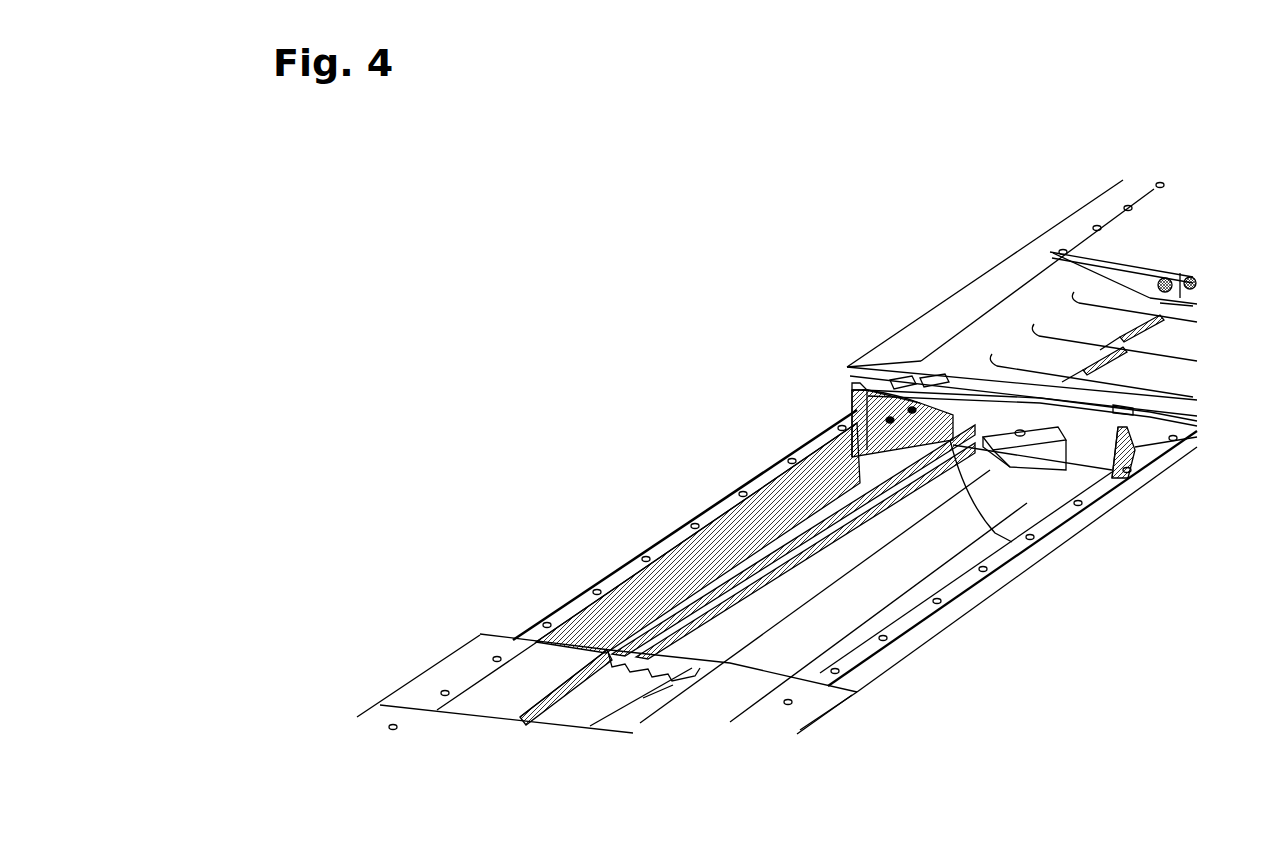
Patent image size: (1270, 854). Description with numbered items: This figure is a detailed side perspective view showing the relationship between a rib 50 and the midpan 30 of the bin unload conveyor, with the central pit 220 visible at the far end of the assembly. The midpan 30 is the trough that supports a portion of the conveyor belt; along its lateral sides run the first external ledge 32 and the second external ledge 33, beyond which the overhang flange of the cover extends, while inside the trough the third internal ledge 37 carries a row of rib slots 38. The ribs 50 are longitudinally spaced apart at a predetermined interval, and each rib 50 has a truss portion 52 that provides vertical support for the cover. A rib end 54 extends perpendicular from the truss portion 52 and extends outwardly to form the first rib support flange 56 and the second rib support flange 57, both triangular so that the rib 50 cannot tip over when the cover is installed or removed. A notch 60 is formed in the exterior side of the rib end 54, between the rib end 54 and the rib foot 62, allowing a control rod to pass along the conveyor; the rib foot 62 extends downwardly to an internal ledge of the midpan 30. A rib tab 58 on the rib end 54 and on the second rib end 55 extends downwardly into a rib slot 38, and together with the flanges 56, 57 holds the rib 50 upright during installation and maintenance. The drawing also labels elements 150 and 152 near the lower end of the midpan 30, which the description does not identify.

The central pit 220 is at (903, 275).
The midpan 30 is at (710, 483).
The second external ledge 33 is at (669, 537).
The third internal ledge 37 is at (749, 559).
The rib slots 38 is at (863, 484).
The first external ledge 32 is at (918, 618).
The plate 152 is at (484, 615).
The bracket 150 is at (627, 719).
The rib 50 is at (852, 383).
The first rib support flange 56 is at (855, 415).
The second rib end 55 is at (856, 437).
The second rib support flange 57 is at (880, 426).
The rib tab 58 is at (890, 437).
The truss portion 52 is at (1096, 446).
The rib foot 62 is at (1070, 466).
The rib end 54 is at (1133, 450).
The notch 60 is at (1105, 456).